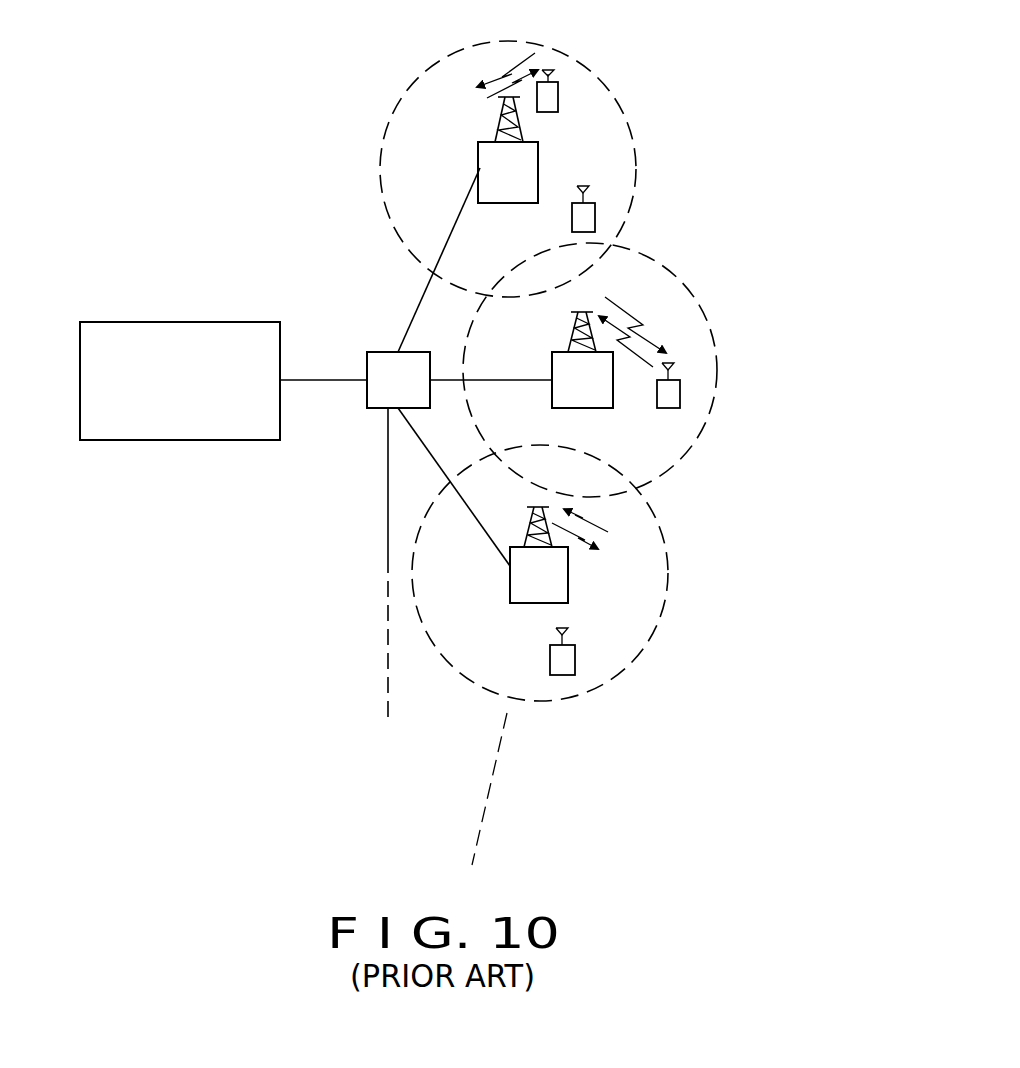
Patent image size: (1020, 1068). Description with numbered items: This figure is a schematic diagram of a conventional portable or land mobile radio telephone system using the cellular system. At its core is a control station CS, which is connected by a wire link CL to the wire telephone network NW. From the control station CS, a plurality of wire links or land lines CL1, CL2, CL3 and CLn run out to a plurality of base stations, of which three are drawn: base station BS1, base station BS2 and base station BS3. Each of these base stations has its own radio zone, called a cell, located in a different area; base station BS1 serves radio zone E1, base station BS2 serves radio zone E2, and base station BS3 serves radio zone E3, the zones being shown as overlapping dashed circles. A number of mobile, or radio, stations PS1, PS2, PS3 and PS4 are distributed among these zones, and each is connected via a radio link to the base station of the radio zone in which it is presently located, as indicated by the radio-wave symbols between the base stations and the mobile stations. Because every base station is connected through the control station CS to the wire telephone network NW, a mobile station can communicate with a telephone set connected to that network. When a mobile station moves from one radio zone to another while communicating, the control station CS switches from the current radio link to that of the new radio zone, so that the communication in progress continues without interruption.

The wire telephone network NW is at (252, 321).
The control station CS is at (398, 380).
The wire link CL is at (326, 385).
The wire link CL1 is at (416, 307).
The wire link CL2 is at (450, 379).
The wire link CL3 is at (443, 470).
The wire link CLn is at (387, 474).
The base station BS1 is at (507, 128).
The base station BS2 is at (609, 352).
The base station BS3 is at (559, 555).
The mobile station PS1 is at (558, 95).
The mobile station PS2 is at (595, 213).
The mobile station PS3 is at (680, 386).
The mobile station PS4 is at (575, 662).
The radio zone E1 is at (601, 78).
The radio zone E2 is at (718, 348).
The radio zone E3 is at (666, 610).